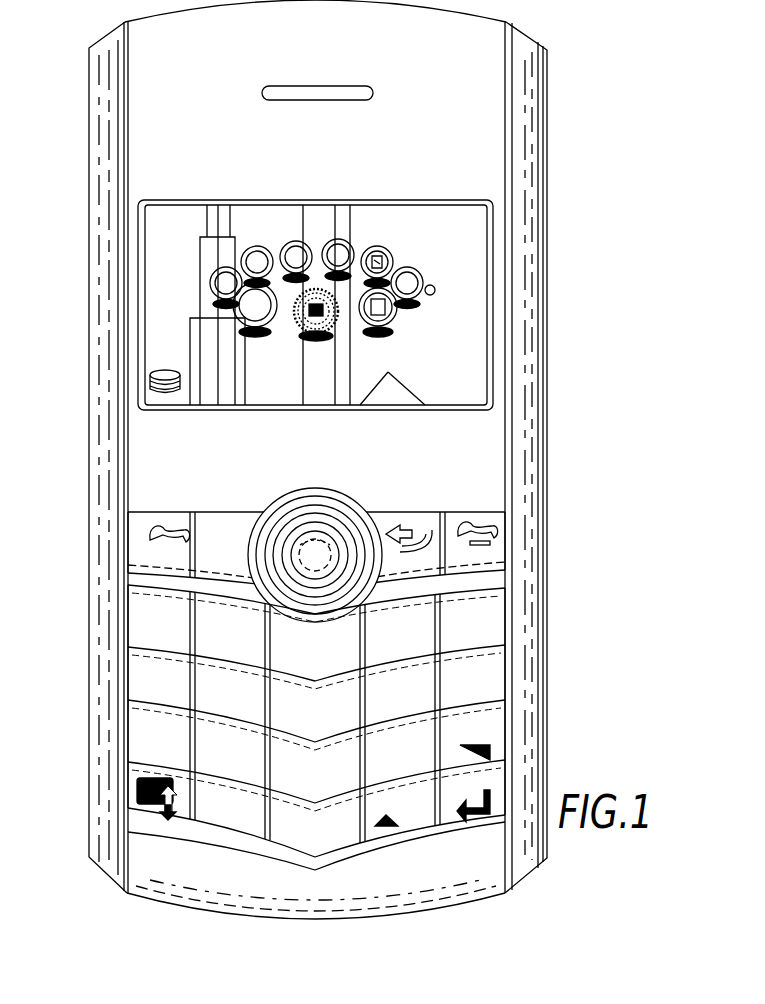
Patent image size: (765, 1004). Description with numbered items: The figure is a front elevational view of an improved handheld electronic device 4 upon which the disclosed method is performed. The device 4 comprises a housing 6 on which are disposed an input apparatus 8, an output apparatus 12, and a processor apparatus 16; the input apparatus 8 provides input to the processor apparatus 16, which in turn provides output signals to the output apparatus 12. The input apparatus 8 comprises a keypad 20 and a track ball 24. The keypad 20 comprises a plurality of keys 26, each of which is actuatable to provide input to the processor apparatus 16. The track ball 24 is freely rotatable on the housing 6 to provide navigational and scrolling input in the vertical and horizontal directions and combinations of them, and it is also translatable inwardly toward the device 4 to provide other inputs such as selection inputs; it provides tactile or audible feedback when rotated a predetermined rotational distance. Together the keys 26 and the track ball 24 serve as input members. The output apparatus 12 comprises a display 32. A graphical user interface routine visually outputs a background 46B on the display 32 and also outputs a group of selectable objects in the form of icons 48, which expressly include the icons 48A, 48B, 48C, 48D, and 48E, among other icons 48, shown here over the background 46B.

The handheld electronic device 4 is at (582, 64).
The housing 6 is at (545, 140).
The input apparatus 8 is at (320, 631).
The output apparatus 12 is at (464, 270).
The processor apparatus 16 is at (140, 873).
The keypad 20 is at (514, 666).
The track ball 24 is at (328, 528).
The keys 26 is at (128, 604).
The display 32 is at (454, 200).
The background 46B is at (164, 235).
The icons 48 is at (347, 244).
The icon 48A is at (291, 322).
The icon 48B is at (395, 322).
The icon 48C is at (417, 272).
The icon 48D is at (389, 252).
The icon 48E is at (293, 241).